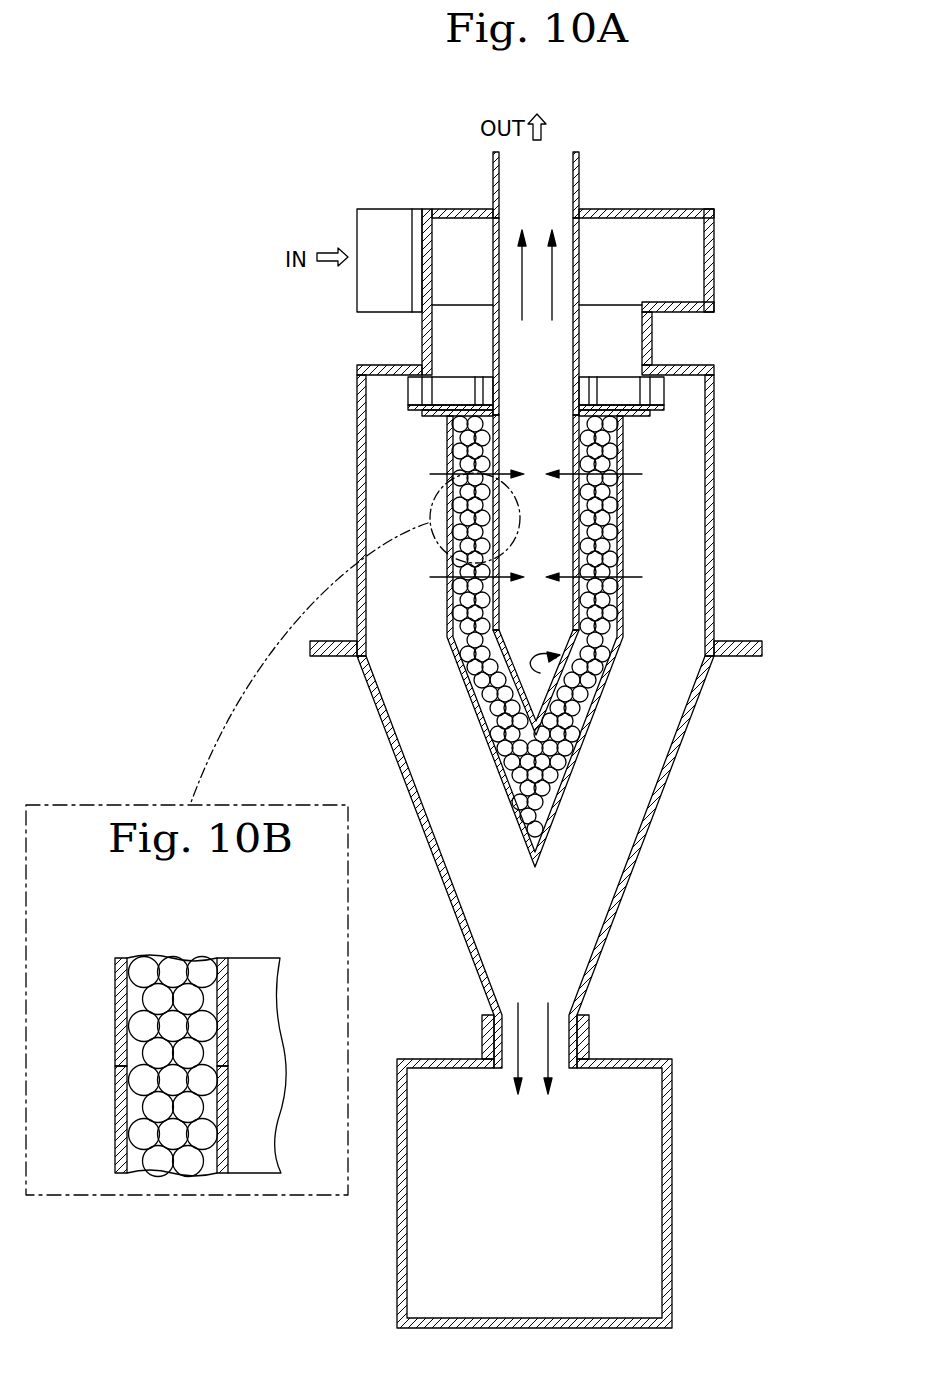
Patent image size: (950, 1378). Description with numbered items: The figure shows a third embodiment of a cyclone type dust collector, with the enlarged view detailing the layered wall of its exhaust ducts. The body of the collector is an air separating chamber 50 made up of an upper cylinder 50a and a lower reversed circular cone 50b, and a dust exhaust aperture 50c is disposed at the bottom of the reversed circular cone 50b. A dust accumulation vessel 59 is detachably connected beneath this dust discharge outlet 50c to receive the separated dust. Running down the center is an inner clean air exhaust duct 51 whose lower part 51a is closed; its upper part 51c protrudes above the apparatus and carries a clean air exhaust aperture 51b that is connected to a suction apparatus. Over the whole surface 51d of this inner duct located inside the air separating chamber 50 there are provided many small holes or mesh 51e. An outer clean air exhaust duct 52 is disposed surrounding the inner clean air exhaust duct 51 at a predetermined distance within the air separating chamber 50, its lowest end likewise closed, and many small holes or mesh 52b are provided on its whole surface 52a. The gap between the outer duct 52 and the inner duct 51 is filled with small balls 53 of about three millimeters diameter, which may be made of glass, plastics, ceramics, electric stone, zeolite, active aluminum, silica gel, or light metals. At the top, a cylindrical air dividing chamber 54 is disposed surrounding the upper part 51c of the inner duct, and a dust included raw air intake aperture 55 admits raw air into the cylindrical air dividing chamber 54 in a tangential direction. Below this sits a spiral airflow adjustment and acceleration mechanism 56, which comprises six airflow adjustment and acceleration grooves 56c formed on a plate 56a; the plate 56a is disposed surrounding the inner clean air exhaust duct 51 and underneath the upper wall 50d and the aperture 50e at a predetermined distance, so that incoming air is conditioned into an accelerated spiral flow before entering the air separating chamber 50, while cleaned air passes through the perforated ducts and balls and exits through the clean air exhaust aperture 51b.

In FIG. 10A, the air separating chamber 50 is at (537, 690).
In FIG. 10A, the cylinder 50a is at (716, 518).
In FIG. 10A, the reversed circular cone 50b is at (622, 900).
In FIG. 10A, the dust exhaust aperture 50c is at (557, 1042).
In FIG. 10A, the upper wall 50d is at (388, 366).
In FIG. 10A, the aperture 50e is at (623, 360).
In FIG. 10A, the inner clean air exhaust duct 51 is at (640, 419).
In FIG. 10B, the inner clean air exhaust duct 51 is at (279, 1029).
In FIG. 10A, the lower part of the inner clean air exhaust duct 51a is at (580, 603).
In FIG. 10A, the clean air exhaust aperture 51b is at (569, 160).
In FIG. 10A, the upper part of the inner clean air exhaust duct 51c is at (580, 240).
In FIG. 10B, the whole surface 51d is at (220, 1008).
In FIG. 10B, the small holes or mesh 51e is at (220, 1072).
In FIG. 10A, the outer clean air exhaust duct 52 is at (574, 768).
In FIG. 10B, the outer clean air exhaust duct 52 is at (90, 1029).
In FIG. 10B, the whole surface 52a is at (117, 987).
In FIG. 10B, the small holes or mesh 52b is at (117, 1045).
In FIG. 10A, the small balls 53 is at (617, 553).
In FIG. 10B, the small balls 53 is at (157, 980).
In FIG. 10A, the cylindrical air dividing chamber 54 is at (683, 252).
In FIG. 10A, the dust included raw air intake aperture 55 is at (380, 236).
In FIG. 10A, the spiral airflow adjustment and acceleration mechanism 56 is at (537, 400).
In FIG. 10A, the plate 56a is at (636, 412).
In FIG. 10A, the airflow adjustment and acceleration grooves 56c is at (652, 380).
In FIG. 10A, the dust accumulation vessel 59 is at (672, 1145).